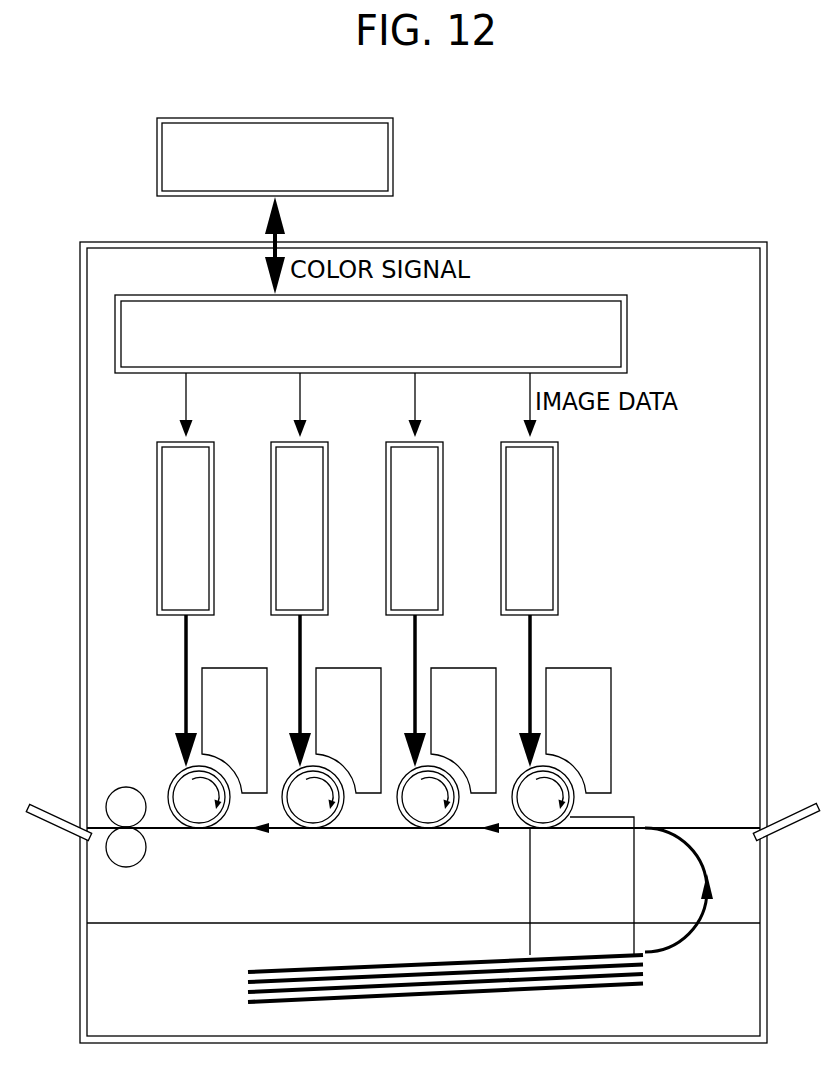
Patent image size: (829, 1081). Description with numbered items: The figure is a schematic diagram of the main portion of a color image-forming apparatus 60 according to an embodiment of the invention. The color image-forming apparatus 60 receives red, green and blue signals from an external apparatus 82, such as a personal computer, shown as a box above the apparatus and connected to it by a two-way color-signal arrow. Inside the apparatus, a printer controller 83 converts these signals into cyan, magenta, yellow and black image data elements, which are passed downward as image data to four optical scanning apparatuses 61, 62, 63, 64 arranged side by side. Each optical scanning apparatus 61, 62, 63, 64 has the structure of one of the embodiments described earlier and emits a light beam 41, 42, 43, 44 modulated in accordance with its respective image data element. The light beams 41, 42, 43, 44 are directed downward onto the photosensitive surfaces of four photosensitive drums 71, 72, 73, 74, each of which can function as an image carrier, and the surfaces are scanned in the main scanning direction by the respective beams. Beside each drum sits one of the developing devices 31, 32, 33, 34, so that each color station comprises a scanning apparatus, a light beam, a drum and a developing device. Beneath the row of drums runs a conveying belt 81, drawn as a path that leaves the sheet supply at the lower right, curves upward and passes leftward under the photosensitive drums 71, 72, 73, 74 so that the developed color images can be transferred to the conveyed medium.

The external apparatus 82 is at (397, 131).
The color image-forming apparatus 60 is at (660, 242).
The printer controller 83 is at (630, 312).
The optical scanning apparatus 61 is at (166, 441).
The optical scanning apparatus 62 is at (280, 441).
The optical scanning apparatus 63 is at (395, 441).
The optical scanning apparatus 64 is at (510, 441).
The light beam 41 is at (185, 647).
The light beam 42 is at (304, 640).
The light beam 43 is at (419, 640).
The light beam 44 is at (534, 640).
The developing device 31 is at (229, 668).
The developing device 32 is at (343, 668).
The developing device 33 is at (458, 668).
The developing device 34 is at (573, 668).
The photosensitive drum 71 is at (202, 817).
The photosensitive drum 72 is at (316, 817).
The photosensitive drum 73 is at (431, 817).
The photosensitive drum 74 is at (545, 817).
The conveying belt 81 is at (689, 853).